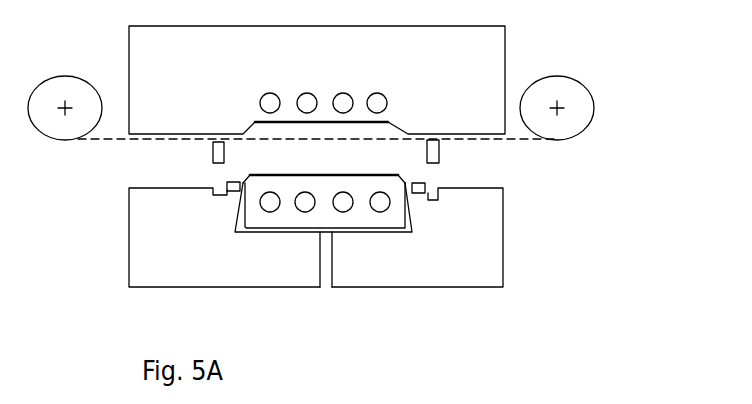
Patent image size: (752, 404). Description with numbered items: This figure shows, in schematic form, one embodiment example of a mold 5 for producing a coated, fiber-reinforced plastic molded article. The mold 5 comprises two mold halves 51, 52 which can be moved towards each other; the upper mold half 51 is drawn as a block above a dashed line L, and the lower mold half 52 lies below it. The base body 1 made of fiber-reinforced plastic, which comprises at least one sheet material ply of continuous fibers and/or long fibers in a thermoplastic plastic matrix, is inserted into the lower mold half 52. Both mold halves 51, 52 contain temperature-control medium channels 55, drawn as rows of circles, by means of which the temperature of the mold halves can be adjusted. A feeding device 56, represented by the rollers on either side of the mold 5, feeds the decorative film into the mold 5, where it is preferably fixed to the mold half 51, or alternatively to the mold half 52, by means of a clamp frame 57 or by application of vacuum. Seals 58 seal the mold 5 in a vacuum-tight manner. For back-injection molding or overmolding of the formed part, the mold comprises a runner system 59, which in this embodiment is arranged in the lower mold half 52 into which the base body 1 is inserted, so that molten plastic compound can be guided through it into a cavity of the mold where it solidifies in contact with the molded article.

The mold 5 is at (648, 37).
The mold half 51 is at (495, 50).
The mold half 52 is at (490, 263).
The temperature-control medium channels 55 is at (380, 100).
The feeding device 56 is at (68, 85).
The clamp frame 57 is at (207, 160).
The seals 58 is at (232, 193).
The runner system 59 is at (325, 248).
The base body 1 is at (328, 175).
The web line L is at (106, 143).